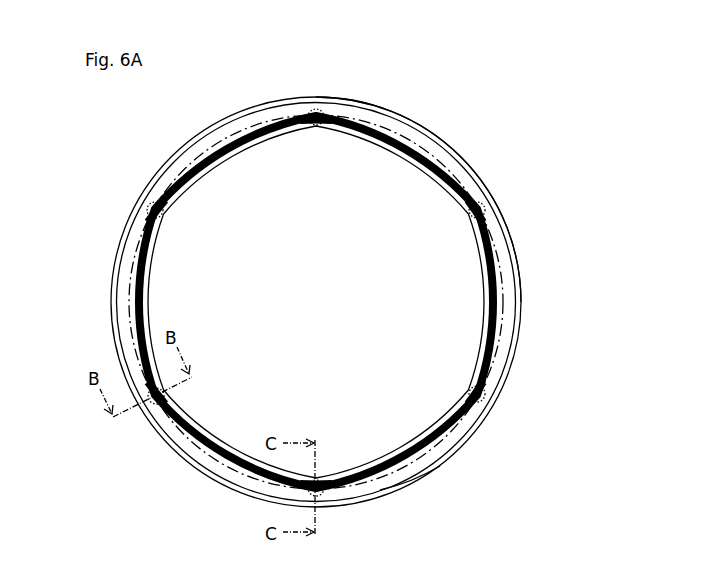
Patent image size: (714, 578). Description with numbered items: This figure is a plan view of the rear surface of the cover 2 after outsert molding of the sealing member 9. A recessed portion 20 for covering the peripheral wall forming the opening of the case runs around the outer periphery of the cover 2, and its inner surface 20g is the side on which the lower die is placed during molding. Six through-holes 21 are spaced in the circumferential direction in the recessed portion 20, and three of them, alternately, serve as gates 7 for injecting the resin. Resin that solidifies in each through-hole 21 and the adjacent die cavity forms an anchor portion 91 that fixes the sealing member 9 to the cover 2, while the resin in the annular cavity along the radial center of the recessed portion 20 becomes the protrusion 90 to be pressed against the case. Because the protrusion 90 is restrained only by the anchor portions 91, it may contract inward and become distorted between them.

The cover 2 is at (503, 142).
The sealing member 9 is at (170, 182).
The recessed portion 20 is at (513, 340).
The inner surface 20g is at (422, 465).
The through-holes 21 is at (323, 126).
The gates 7 is at (150, 408).
The protrusion 90 is at (503, 297).
The anchor portion 91 is at (324, 108).